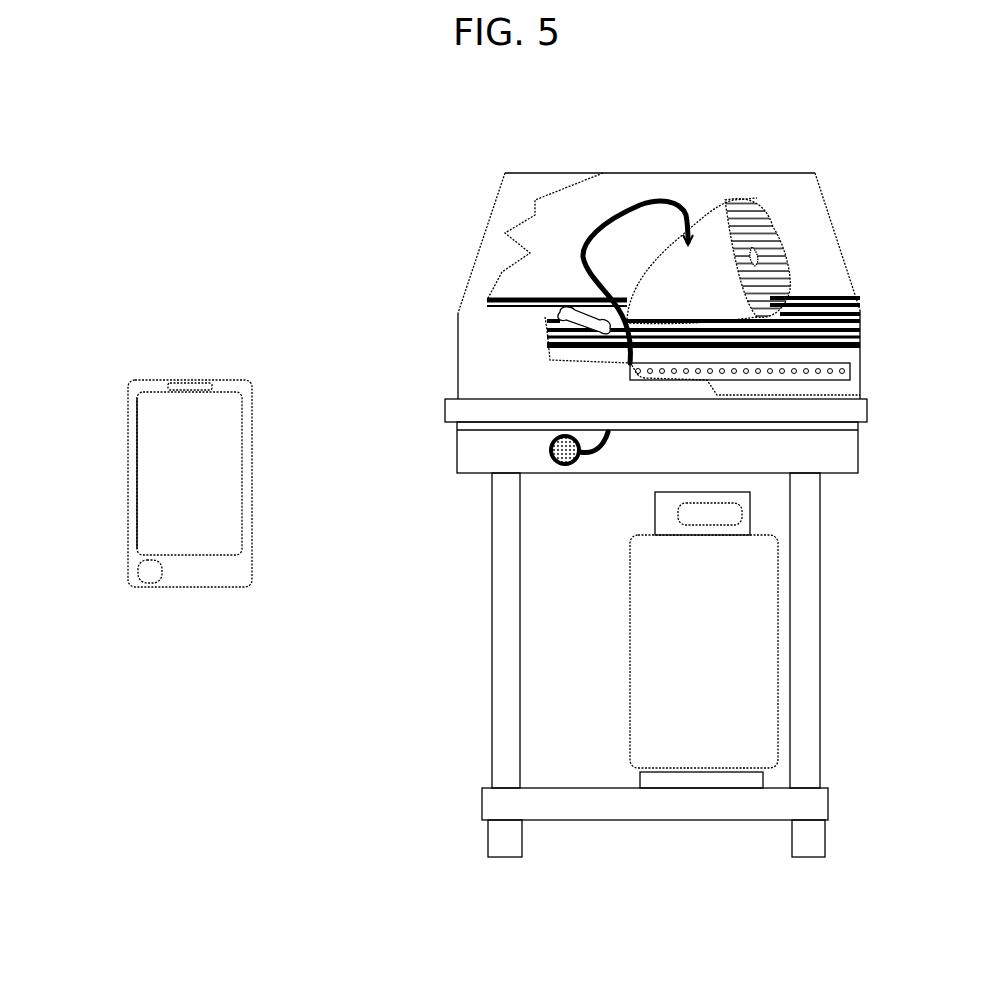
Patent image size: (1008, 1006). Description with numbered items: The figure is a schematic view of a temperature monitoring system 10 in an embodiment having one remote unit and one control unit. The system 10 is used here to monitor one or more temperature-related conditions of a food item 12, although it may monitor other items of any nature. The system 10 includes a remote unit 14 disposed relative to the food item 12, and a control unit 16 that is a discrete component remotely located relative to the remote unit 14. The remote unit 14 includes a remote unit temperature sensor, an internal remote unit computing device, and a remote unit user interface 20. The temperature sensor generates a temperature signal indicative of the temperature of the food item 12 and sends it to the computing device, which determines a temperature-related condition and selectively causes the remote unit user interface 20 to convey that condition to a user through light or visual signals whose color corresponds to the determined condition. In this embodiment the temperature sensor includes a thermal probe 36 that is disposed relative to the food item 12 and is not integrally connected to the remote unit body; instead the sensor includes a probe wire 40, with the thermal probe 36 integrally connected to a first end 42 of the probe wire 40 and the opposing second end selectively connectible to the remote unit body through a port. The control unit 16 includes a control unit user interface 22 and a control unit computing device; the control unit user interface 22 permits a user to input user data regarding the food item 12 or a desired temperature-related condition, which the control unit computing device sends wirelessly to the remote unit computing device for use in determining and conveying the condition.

The system 10 is at (217, 173).
The food item 12 is at (757, 223).
The remote unit 14 is at (577, 470).
The control unit 16 is at (97, 434).
The remote unit user interface 20 is at (551, 457).
The control unit user interface 22 is at (215, 437).
The thermal probe 36 is at (690, 240).
The probe wire 40 is at (642, 200).
The first end 42 is at (688, 242).